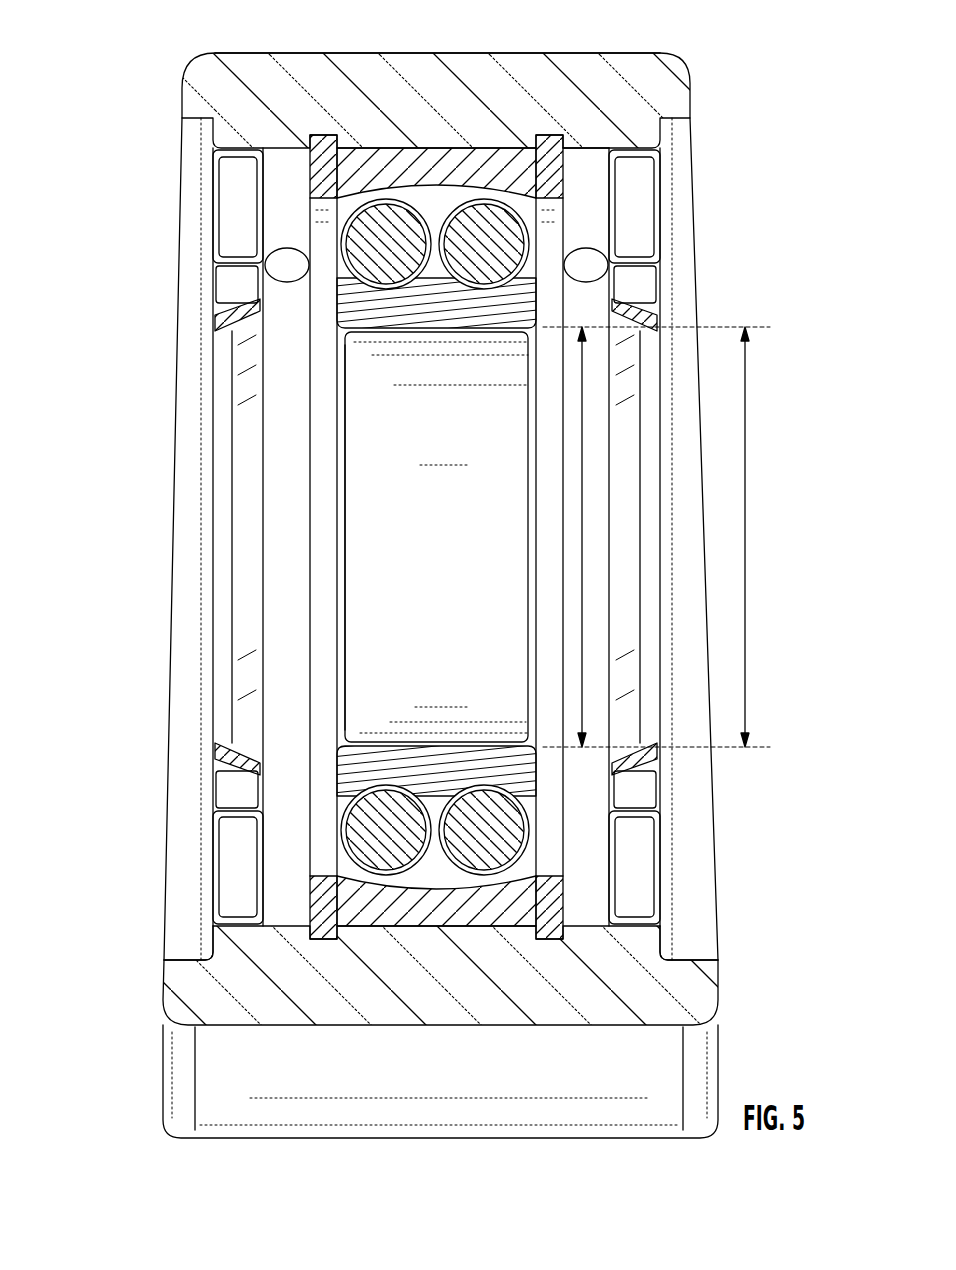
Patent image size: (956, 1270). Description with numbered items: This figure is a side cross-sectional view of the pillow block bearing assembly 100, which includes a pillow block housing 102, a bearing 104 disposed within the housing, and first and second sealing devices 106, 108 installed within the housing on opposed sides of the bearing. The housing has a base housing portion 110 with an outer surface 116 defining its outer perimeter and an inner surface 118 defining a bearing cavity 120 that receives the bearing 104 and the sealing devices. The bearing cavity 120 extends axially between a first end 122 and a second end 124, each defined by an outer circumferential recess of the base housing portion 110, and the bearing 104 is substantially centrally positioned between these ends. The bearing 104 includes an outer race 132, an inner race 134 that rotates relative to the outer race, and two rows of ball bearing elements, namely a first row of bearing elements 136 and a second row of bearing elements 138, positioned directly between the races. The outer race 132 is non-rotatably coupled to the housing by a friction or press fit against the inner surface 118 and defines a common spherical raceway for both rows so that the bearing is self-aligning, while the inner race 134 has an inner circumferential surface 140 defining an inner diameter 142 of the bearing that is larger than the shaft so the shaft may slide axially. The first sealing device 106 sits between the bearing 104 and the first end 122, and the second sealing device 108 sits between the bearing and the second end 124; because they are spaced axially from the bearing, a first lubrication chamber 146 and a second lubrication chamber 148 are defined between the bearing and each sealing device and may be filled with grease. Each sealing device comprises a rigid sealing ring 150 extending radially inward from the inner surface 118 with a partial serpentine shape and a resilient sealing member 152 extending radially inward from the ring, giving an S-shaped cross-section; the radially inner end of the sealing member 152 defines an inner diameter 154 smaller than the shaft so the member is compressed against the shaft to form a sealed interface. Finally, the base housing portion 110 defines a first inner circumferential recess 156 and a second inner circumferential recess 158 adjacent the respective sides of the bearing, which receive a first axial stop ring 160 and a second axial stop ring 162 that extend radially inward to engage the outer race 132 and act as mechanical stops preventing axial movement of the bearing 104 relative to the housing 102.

The pillow block bearing assembly 100 is at (425, 573).
The pillow block housing 102 is at (481, 576).
The base housing portion 110 is at (700, 70).
The bearing 104 is at (447, 527).
The first sealing device 106 is at (194, 367).
The second sealing device 108 is at (676, 199).
The outer surface 116 is at (222, 53).
The inner surface 118 is at (580, 160).
The bearing cavity 120 is at (159, 495).
The first end of the bearing cavity 122 is at (177, 958).
The second end of the bearing cavity 124 is at (708, 957).
The outer race 132 is at (391, 150).
The inner race 134 is at (390, 318).
The first row of bearing elements 136 is at (390, 860).
The second row of bearing elements 138 is at (487, 850).
The inner circumferential surface 140 is at (370, 548).
The inner diameter of the bearing 142 is at (580, 443).
The first lubrication chamber 146 is at (284, 910).
The second lubrication chamber 148 is at (598, 910).
The sealing ring 150 is at (213, 208).
The resilient sealing member 152 is at (217, 757).
The inner diameter of the sealing device 154 is at (747, 548).
The first inner circumferential recess 156 is at (320, 935).
The second inner circumferential recess 158 is at (548, 930).
The first axial stop ring 160 is at (314, 137).
The second axial stop ring 162 is at (550, 143).